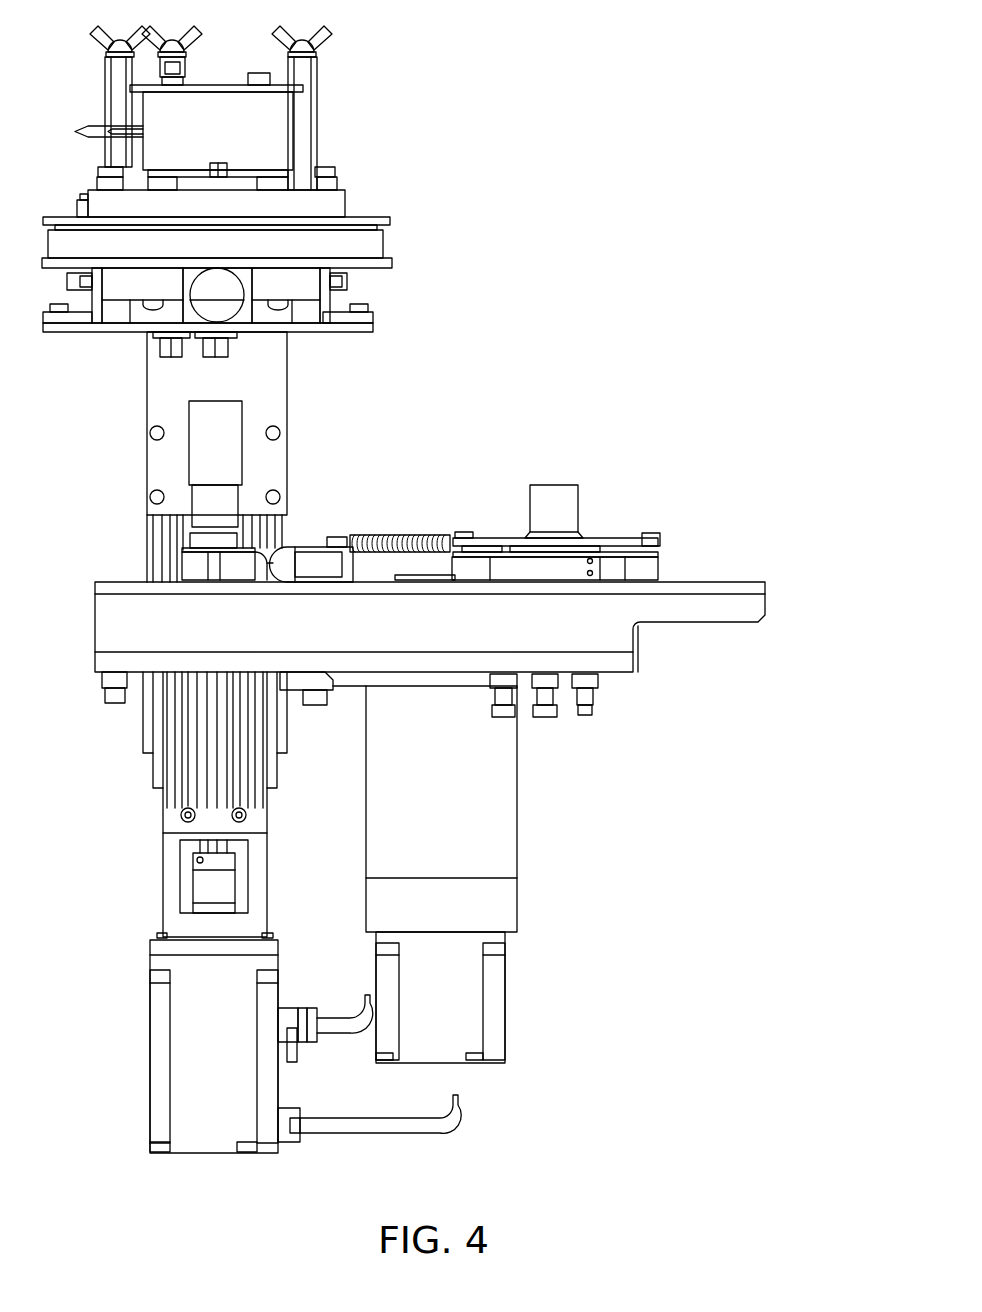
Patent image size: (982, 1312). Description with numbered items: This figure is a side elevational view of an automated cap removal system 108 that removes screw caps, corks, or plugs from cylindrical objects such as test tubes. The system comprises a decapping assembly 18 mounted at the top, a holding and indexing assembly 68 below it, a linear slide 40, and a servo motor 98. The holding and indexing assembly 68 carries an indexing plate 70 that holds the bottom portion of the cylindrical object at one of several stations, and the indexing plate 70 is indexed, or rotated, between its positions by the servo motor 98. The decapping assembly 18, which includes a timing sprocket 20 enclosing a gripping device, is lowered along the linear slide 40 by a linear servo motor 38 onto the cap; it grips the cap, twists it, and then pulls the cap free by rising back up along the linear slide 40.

The decapping assembly 18 is at (363, 198).
The timing sprocket 20 is at (390, 264).
The automated cap removal system 108 is at (618, 200).
The linear slide 40 is at (115, 758).
The holding and indexing assembly 68 is at (777, 590).
The indexing plate 70 is at (657, 570).
The servo motor 98 is at (535, 948).
The linear servo motor 38 is at (150, 1032).